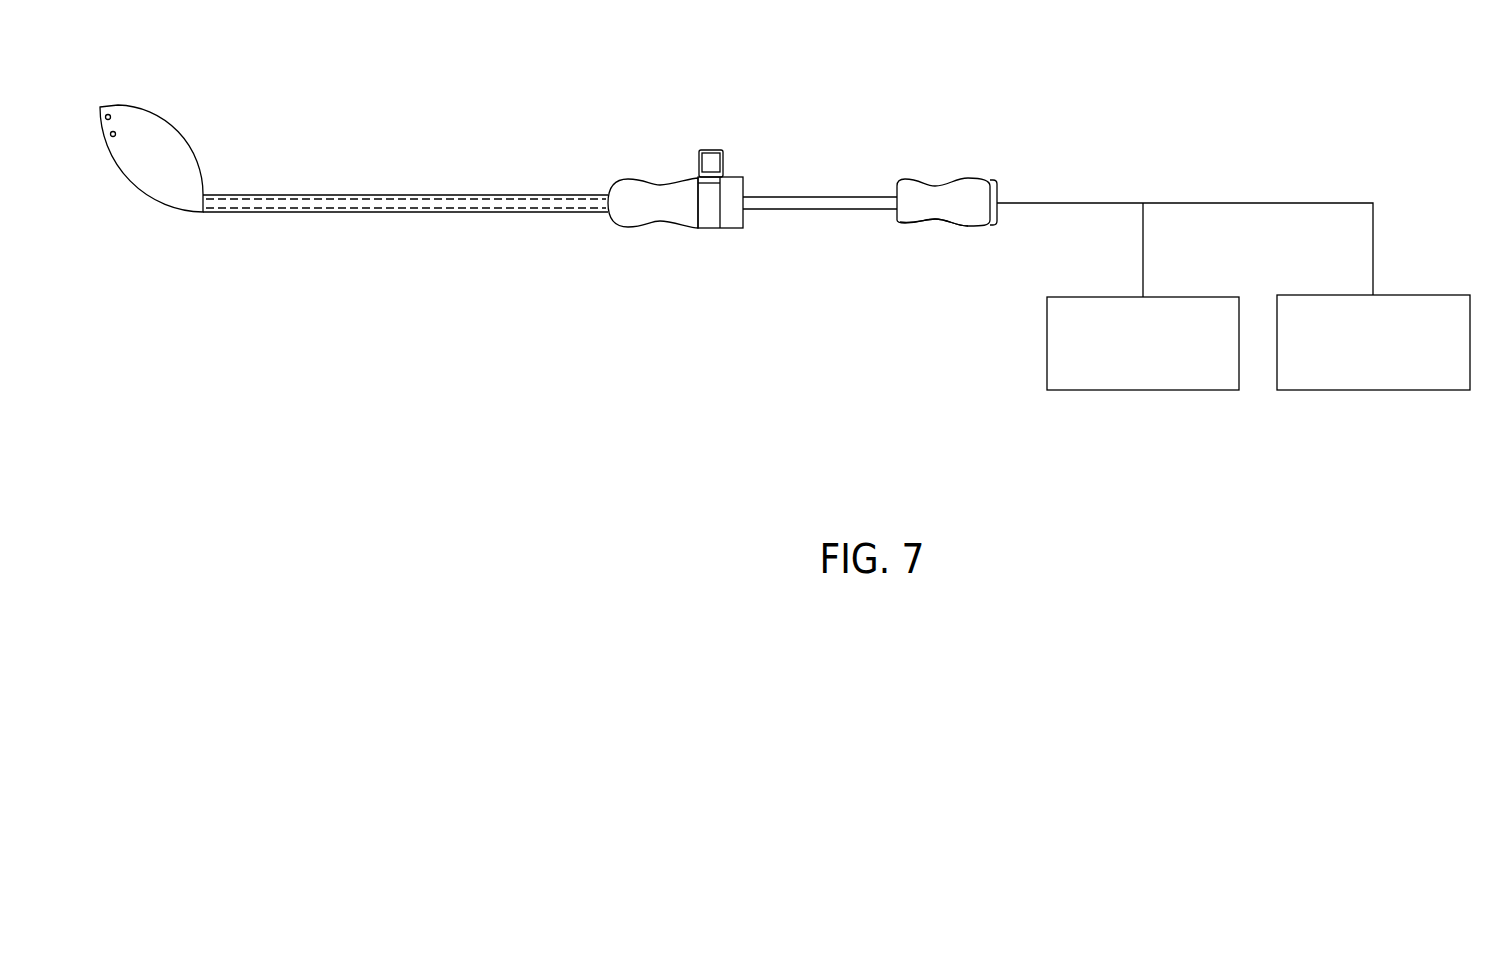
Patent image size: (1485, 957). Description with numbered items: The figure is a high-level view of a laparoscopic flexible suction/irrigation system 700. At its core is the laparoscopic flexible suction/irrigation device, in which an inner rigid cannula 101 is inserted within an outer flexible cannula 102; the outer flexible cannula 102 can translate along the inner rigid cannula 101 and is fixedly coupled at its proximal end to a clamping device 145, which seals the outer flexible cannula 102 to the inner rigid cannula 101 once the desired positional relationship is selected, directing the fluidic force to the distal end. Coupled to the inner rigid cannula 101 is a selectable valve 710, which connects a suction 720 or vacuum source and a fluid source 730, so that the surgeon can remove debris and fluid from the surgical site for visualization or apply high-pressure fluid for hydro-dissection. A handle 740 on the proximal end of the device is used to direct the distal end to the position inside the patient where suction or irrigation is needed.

The laparoscopic flexible suction/irrigation system 700 is at (386, 397).
The outer flexible cannula 102 is at (147, 171).
The inner rigid cannula 101 is at (812, 210).
The clamping device 145 is at (710, 148).
The selectable valve 710 is at (966, 178).
The handle 740 is at (937, 226).
The suction source 720 is at (1112, 392).
The fluid source 730 is at (1376, 392).